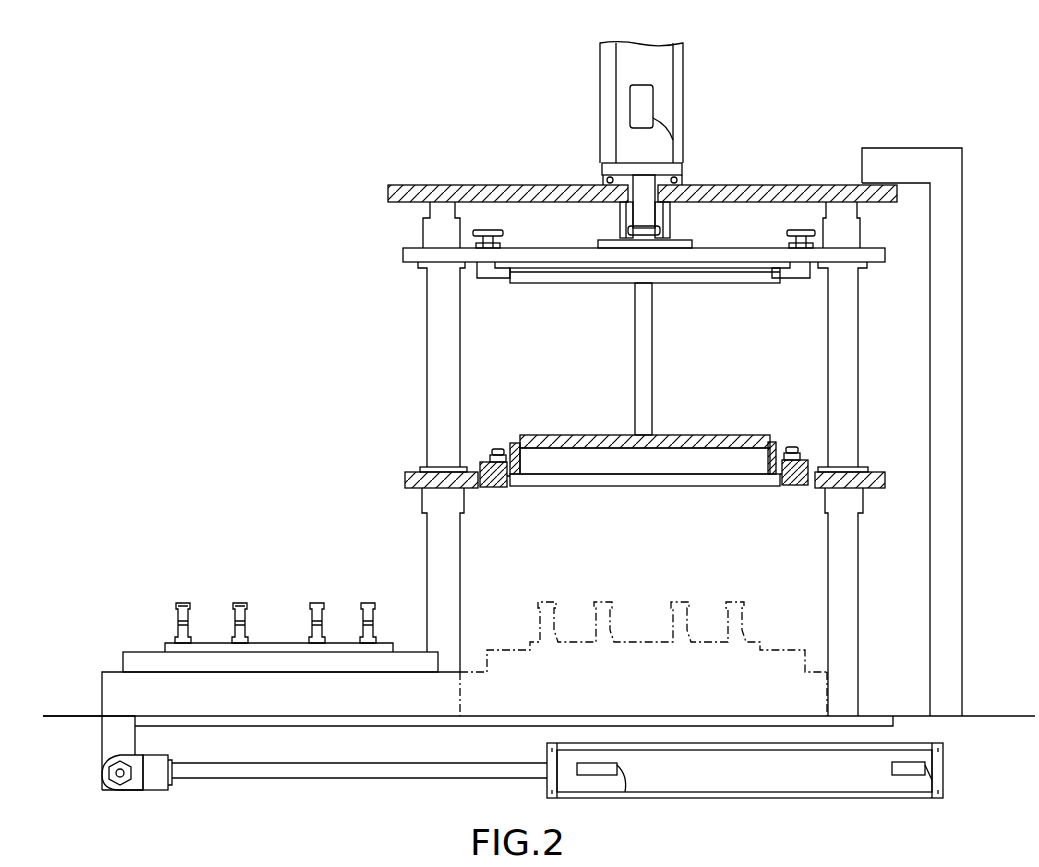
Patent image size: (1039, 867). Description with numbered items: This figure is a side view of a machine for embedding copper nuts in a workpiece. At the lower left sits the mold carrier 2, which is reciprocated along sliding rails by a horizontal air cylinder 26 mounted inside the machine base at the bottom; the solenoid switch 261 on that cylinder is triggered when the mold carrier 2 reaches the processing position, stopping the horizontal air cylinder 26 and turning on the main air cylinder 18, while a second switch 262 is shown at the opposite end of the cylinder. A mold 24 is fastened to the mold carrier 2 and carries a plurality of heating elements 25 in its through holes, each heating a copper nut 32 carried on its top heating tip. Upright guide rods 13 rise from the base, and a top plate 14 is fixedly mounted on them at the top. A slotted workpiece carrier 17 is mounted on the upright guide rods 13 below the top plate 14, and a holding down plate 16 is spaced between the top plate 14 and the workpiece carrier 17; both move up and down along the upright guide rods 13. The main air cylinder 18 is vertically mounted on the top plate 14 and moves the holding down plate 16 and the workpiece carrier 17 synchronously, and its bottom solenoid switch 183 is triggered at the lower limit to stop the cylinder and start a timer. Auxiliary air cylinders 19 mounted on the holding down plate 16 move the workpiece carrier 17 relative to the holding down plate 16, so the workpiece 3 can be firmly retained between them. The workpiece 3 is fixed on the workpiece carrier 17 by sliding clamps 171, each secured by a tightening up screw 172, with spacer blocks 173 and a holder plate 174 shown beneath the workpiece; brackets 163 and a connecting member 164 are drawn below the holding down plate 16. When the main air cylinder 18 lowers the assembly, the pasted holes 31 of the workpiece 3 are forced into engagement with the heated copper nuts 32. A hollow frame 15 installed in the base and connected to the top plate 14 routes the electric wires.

The mold carrier 2 is at (112, 668).
The workpiece 3 is at (660, 437).
The upright guide rods 13 is at (437, 325).
The top plate 14 is at (793, 185).
The hollow frame 15 is at (950, 372).
The holding down plate 16 is at (403, 252).
The workpiece carrier 17 is at (413, 478).
The main air cylinder 18 is at (600, 58).
The auxiliary air cylinders 19 is at (618, 218).
The mold 24 is at (286, 643).
The heating elements 25 is at (178, 625).
The horizontal air cylinder 26 is at (808, 777).
The pasted holes 31 is at (660, 452).
The copper nuts 32 is at (240, 604).
The bracket 163 is at (508, 270).
The connecting rod plate 164 is at (690, 284).
The sliding clamps 171 is at (486, 460).
The tightening up screw 172 is at (497, 452).
The spacer block 173 is at (518, 478).
The holder plate 174 is at (708, 478).
The bottom solenoid switch 183 is at (655, 100).
The solenoid switch 261 is at (912, 772).
The left limit sensor 262 is at (612, 775).